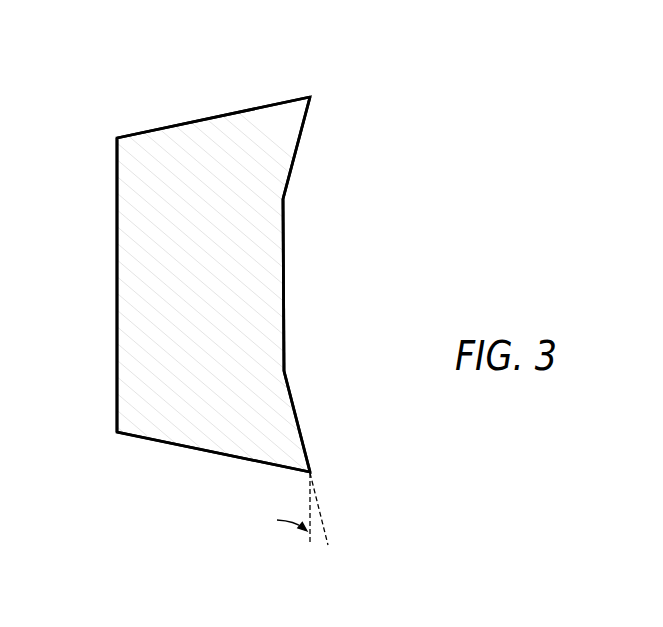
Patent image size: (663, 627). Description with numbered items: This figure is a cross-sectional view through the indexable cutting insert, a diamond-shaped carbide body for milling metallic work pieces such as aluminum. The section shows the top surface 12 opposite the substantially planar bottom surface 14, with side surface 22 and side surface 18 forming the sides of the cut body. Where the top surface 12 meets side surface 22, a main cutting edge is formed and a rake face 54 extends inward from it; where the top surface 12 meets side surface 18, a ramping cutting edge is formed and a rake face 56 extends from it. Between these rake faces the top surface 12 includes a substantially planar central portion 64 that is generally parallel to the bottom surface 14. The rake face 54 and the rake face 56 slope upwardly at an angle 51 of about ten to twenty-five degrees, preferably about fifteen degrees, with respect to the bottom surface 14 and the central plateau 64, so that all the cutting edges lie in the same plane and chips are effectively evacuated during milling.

The top surface 12 is at (300, 278).
The side surface 22 is at (191, 106).
The side surface 18 is at (191, 464).
The bottom surface 14 is at (110, 277).
The rake face 54 is at (300, 140).
The central portion 64 is at (285, 330).
The rake face 56 is at (300, 427).
The angle 51 is at (332, 524).